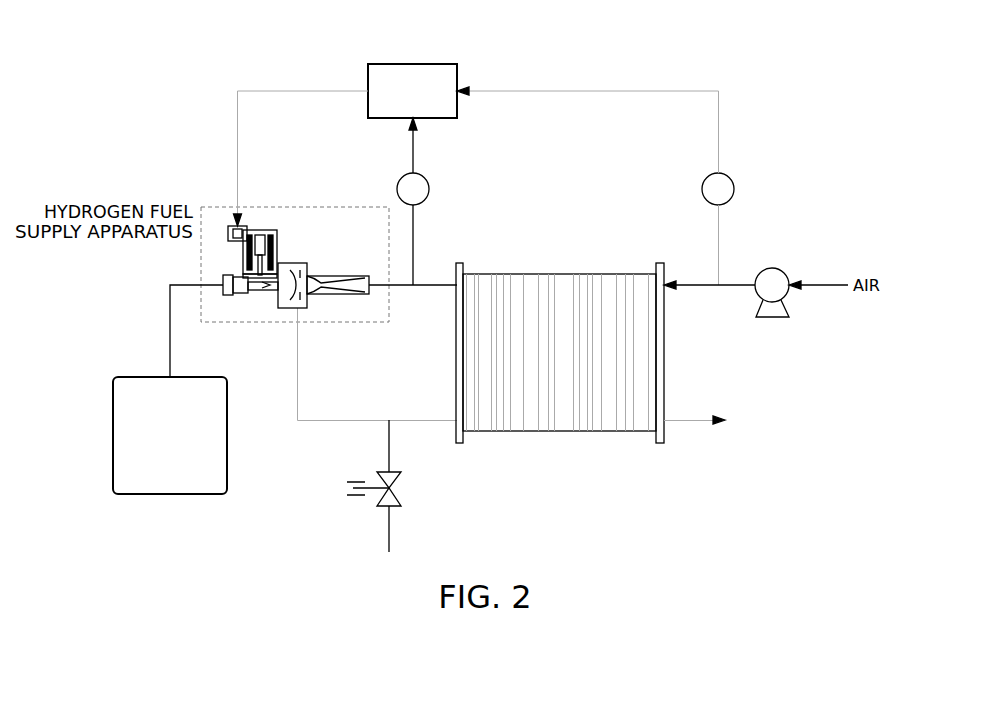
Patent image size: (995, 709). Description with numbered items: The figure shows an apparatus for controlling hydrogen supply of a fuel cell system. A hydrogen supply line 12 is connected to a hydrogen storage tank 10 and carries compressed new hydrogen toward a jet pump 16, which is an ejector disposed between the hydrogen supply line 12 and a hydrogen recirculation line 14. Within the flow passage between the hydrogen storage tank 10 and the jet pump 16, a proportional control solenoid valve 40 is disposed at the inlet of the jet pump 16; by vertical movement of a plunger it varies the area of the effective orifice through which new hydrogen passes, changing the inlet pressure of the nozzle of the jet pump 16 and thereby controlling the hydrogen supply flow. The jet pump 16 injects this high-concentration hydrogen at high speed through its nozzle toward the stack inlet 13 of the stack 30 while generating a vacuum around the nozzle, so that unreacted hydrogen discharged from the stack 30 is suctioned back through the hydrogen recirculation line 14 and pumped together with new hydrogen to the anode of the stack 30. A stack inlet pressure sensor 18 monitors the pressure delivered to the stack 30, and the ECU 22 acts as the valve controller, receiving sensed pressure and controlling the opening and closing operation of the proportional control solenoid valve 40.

The hydrogen storage tank 10 is at (227, 452).
The hydrogen supply line 12 is at (170, 325).
The stack inlet 13 is at (432, 288).
The hydrogen recirculation line 14 is at (297, 357).
The jet pump 16 is at (338, 276).
The stack inlet pressure sensor 18 is at (429, 188).
The ECU 22 is at (411, 63).
The stack 30 is at (574, 282).
The proportional control solenoid valve 40 is at (262, 228).